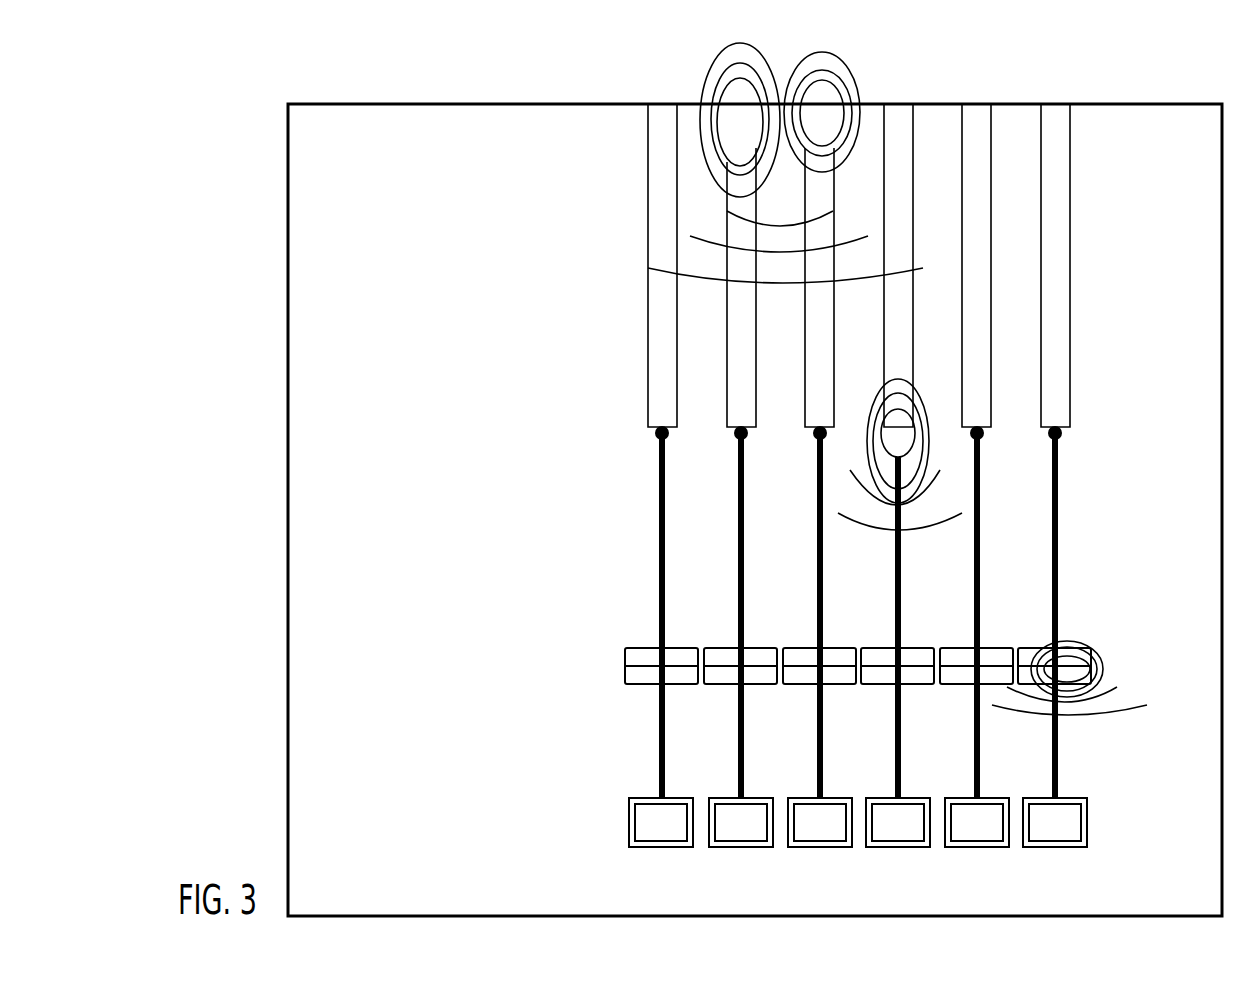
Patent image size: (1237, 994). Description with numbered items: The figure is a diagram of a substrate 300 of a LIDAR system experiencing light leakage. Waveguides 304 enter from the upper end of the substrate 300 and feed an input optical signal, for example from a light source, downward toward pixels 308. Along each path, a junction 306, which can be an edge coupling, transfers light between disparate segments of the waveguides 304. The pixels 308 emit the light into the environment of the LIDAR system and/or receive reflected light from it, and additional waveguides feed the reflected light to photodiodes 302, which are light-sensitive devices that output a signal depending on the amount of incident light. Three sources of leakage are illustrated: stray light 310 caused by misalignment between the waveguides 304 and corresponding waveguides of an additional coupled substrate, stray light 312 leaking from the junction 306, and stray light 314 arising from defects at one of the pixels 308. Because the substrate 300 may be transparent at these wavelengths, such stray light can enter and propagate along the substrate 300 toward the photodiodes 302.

The substrate 300 is at (401, 102).
The photodiodes 302 is at (609, 820).
The waveguides 304 is at (630, 189).
The junction 306 is at (651, 422).
The pixels 308 is at (601, 667).
The stray light 310 is at (705, 60).
The stray light 312 is at (930, 393).
The stray light 314 is at (1082, 630).